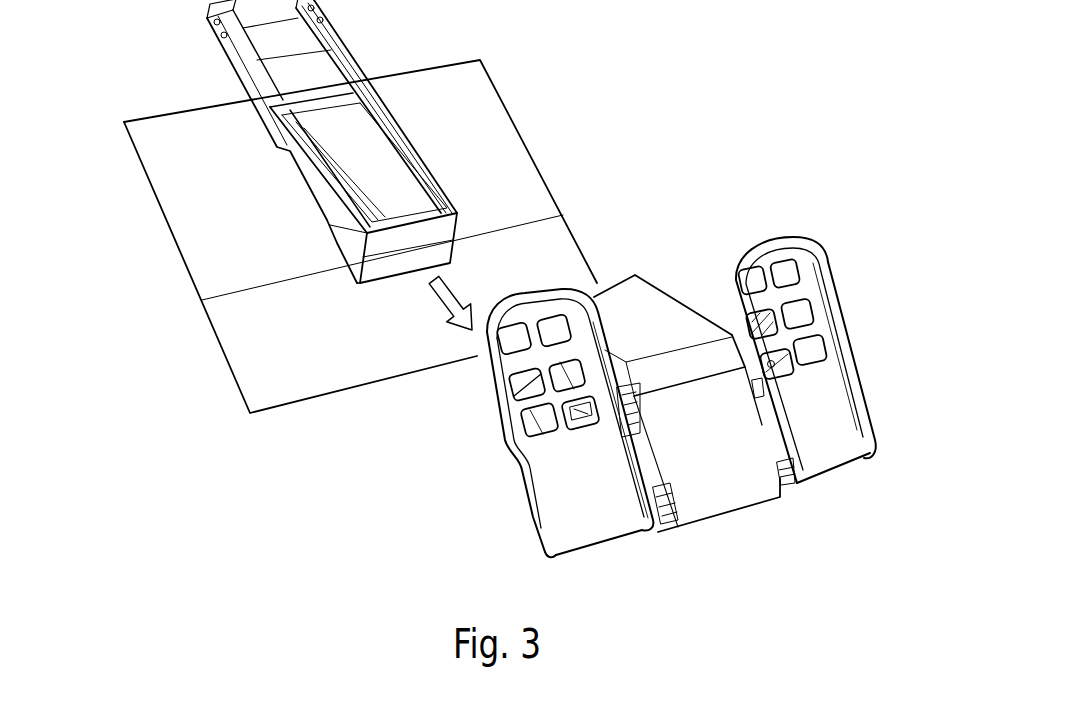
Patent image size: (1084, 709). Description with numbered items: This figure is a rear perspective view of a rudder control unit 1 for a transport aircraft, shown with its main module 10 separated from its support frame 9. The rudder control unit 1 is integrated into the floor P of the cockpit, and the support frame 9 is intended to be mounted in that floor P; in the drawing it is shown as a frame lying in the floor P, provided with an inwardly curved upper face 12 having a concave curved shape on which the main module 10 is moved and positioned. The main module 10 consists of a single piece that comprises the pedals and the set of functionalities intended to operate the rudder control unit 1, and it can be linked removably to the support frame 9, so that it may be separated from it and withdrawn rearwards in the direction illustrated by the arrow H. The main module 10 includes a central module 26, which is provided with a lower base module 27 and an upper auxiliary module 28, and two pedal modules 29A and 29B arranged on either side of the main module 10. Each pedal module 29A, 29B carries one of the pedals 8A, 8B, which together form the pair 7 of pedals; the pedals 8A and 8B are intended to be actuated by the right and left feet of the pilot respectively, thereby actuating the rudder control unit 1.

The rudder control unit 1 is at (619, 62).
The pair of pedals 7 is at (669, 388).
The pedal 8A is at (845, 336).
The pedal 8B is at (497, 440).
The support frame 9 is at (430, 136).
The main module 10 is at (666, 268).
The inwardly curved upper face 12 is at (374, 146).
The central module 26 is at (694, 282).
The lower base module 27 is at (760, 464).
The upper auxiliary module 28 is at (625, 276).
The pedal module 29A is at (844, 280).
The pedal module 29B is at (505, 479).
The floor P is at (147, 178).
The arrow H is at (437, 293).